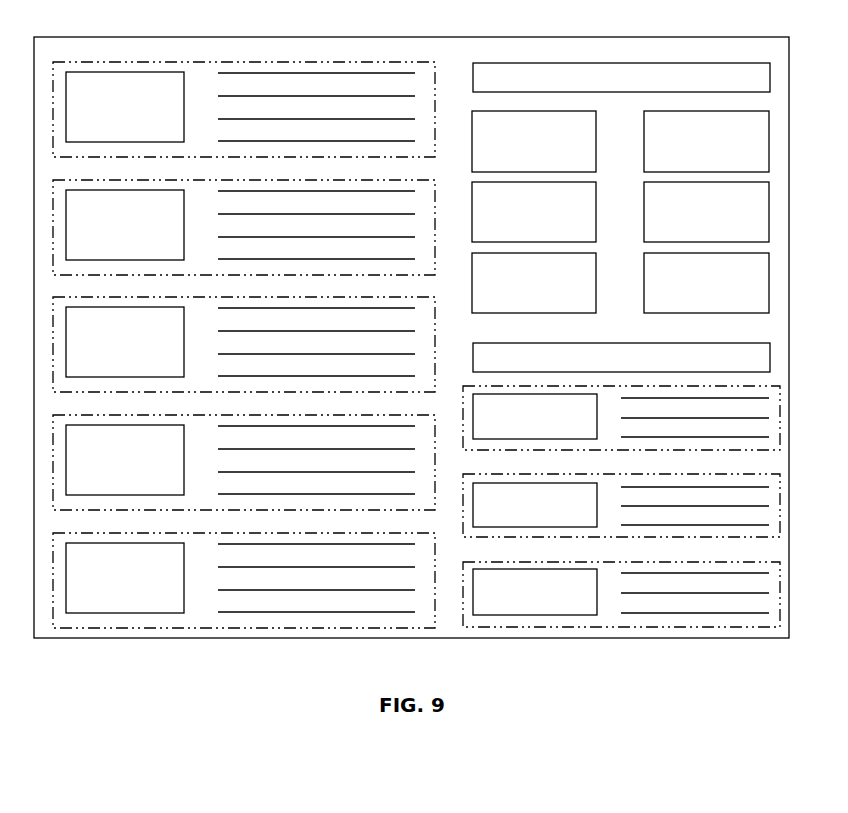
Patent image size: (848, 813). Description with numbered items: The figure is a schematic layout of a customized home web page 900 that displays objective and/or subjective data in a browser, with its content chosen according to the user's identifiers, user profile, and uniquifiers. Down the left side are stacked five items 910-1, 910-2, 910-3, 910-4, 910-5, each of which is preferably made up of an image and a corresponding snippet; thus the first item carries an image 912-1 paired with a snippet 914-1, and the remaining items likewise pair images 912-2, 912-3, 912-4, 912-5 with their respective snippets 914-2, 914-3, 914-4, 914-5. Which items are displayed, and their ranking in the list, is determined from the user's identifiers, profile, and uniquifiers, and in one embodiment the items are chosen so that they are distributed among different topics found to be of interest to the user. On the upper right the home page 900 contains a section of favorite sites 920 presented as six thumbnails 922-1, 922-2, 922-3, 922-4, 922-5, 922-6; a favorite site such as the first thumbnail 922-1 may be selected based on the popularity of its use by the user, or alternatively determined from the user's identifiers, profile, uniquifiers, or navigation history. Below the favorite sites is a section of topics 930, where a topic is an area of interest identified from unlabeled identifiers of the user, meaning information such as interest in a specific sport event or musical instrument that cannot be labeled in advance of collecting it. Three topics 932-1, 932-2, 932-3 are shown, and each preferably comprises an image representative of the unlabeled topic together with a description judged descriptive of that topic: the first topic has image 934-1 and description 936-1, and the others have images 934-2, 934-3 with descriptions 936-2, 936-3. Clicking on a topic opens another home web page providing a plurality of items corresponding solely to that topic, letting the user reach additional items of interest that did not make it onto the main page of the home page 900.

The customized home web page 900 is at (120, 36).
The item 910-1 is at (237, 62).
The item 910-2 is at (237, 180).
The item 910-3 is at (237, 297).
The item 910-4 is at (237, 415).
The item 910-5 is at (237, 533).
The image 912-1 is at (151, 121).
The image 912-2 is at (151, 239).
The image 912-3 is at (151, 356).
The image 912-4 is at (151, 474).
The image 912-5 is at (151, 592).
The snippet 914-1 is at (337, 110).
The snippet 914-2 is at (337, 228).
The snippet 914-3 is at (337, 345).
The snippet 914-4 is at (343, 463).
The snippet 914-5 is at (337, 581).
The favorite sites 920 is at (535, 63).
The favorite site thumbnail 922-1 is at (572, 156).
The favorite site thumbnail 922-2 is at (743, 156).
The favorite site thumbnail 922-3 is at (572, 227).
The favorite site thumbnail 922-4 is at (743, 227).
The favorite site thumbnail 922-5 is at (572, 298).
The favorite site thumbnail 922-6 is at (743, 298).
The section of topics 930 is at (530, 343).
The topic 932-1 is at (555, 450).
The topic 932-2 is at (555, 537).
The topic 932-3 is at (696, 563).
The image 934-1 is at (561, 426).
The image 934-2 is at (564, 515).
The image 934-3 is at (555, 603).
The description 936-1 is at (687, 412).
The description 936-2 is at (691, 499).
The description 936-3 is at (684, 587).